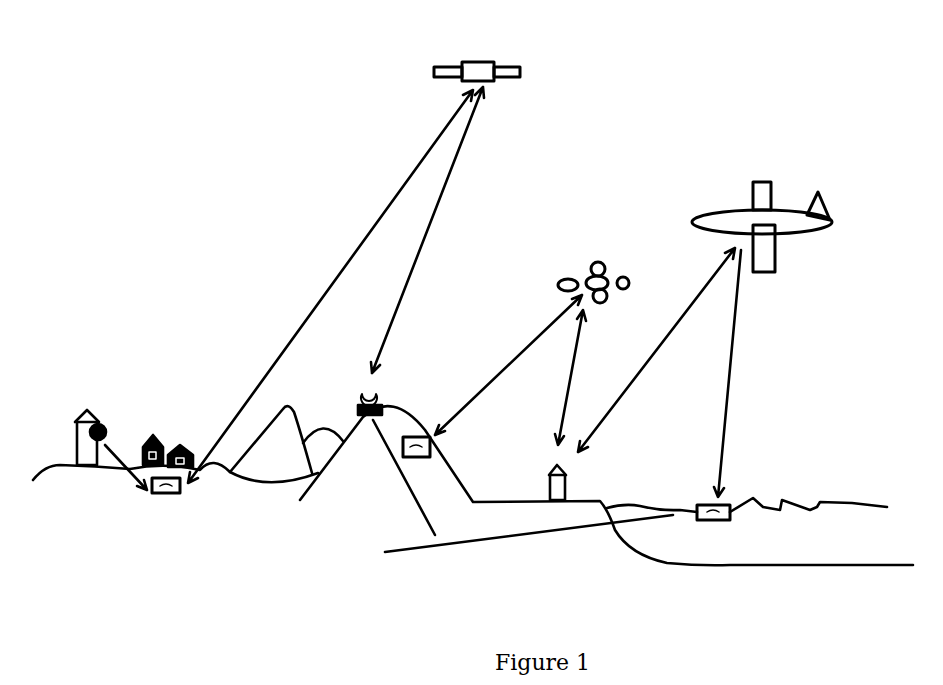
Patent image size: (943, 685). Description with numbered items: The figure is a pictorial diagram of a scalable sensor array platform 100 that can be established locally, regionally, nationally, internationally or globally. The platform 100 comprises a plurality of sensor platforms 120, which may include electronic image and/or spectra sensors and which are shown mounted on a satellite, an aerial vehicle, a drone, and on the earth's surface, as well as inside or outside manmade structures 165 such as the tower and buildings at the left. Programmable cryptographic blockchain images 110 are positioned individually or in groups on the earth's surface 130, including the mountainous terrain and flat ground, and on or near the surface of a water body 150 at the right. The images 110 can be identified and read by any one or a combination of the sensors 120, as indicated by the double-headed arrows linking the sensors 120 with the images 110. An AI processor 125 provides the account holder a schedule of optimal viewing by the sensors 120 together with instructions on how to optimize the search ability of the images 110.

The scalable sensor array platform 100 is at (862, 74).
The programmable cryptographic blockchain image 110 is at (185, 495).
The sensor platform 120 is at (458, 56).
The AI processor 125 is at (555, 493).
The earth's surface 130 is at (423, 403).
The water body 150 is at (850, 482).
The manmade structure 165 is at (167, 435).